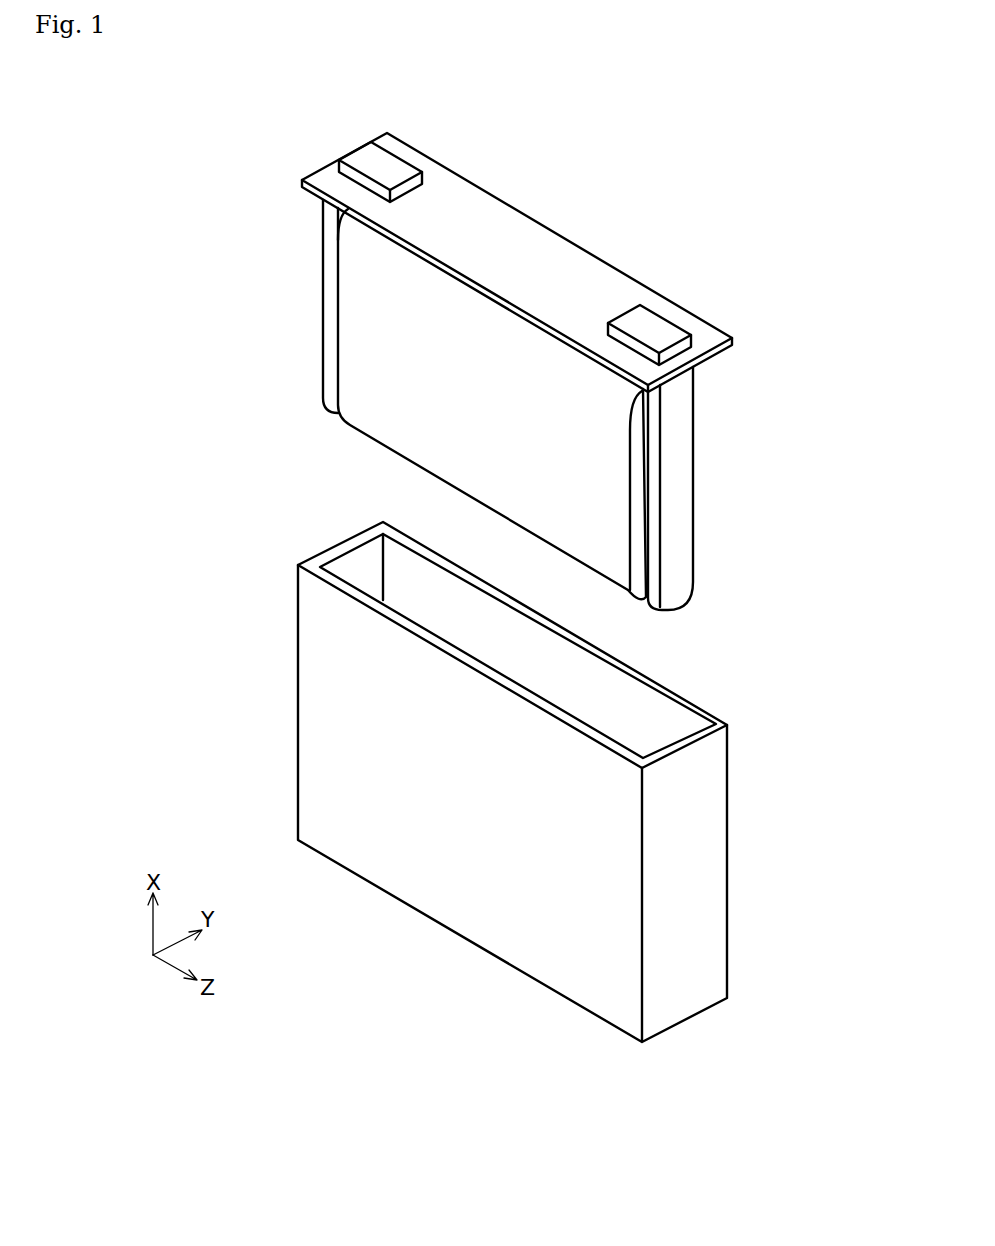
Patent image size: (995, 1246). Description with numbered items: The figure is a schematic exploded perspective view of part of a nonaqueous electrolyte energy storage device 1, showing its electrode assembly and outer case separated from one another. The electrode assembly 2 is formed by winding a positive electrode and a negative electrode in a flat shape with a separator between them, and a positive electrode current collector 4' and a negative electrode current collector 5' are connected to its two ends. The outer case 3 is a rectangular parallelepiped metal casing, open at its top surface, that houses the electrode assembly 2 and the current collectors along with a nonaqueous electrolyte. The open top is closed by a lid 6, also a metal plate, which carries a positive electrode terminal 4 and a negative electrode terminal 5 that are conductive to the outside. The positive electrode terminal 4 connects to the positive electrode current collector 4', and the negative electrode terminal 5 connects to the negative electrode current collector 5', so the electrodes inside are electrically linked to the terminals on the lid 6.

The nonaqueous electrolyte energy storage device 1 is at (674, 182).
The electrode assembly 2 is at (350, 348).
The outer case 3 is at (715, 838).
The positive electrode terminal 4 is at (391, 144).
The positive electrode current collector 4' is at (282, 306).
The negative electrode terminal 5 is at (662, 307).
The negative electrode current collector 5' is at (706, 488).
The lid 6 is at (476, 205).